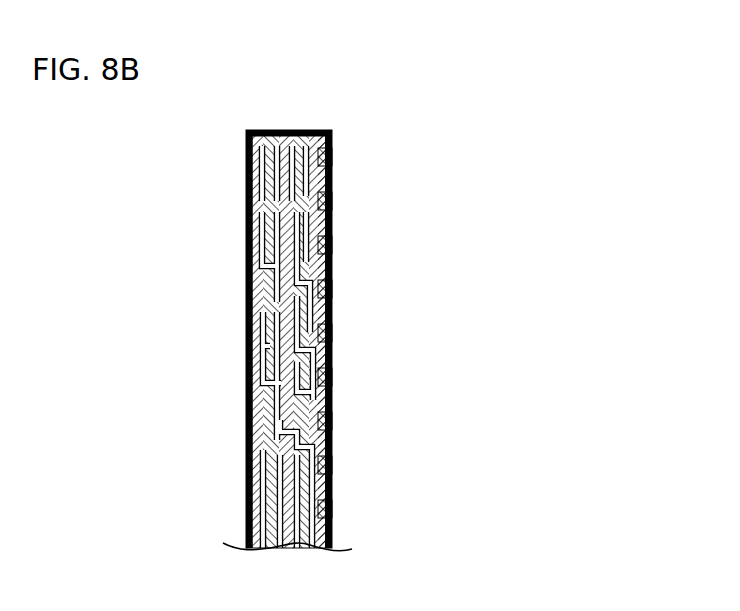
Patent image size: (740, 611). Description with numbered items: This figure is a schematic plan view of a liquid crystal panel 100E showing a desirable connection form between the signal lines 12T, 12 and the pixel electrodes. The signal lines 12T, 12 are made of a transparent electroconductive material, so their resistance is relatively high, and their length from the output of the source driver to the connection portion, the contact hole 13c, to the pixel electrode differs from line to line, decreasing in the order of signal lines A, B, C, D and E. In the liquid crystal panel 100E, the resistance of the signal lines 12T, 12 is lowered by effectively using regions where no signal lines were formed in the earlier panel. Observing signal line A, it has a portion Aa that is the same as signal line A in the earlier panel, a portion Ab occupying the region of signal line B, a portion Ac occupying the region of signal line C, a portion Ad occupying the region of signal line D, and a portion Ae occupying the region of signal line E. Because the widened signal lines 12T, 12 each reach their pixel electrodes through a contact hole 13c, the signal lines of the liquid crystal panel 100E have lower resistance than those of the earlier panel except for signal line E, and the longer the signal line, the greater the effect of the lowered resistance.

The liquid crystal panel 100E is at (370, 121).
The signal lines 12 is at (289, 339).
The signal lines 12T is at (262, 347).
The contact hole 13c is at (328, 166).
The portion Aa of signal line A Aa is at (263, 418).
The portion Ab of signal line A Ab is at (263, 312).
The portion Ac of signal line A Ac is at (263, 222).
The portion Ad of signal line A Ad is at (263, 152).
The portion Ae of signal line A Ae is at (262, 133).